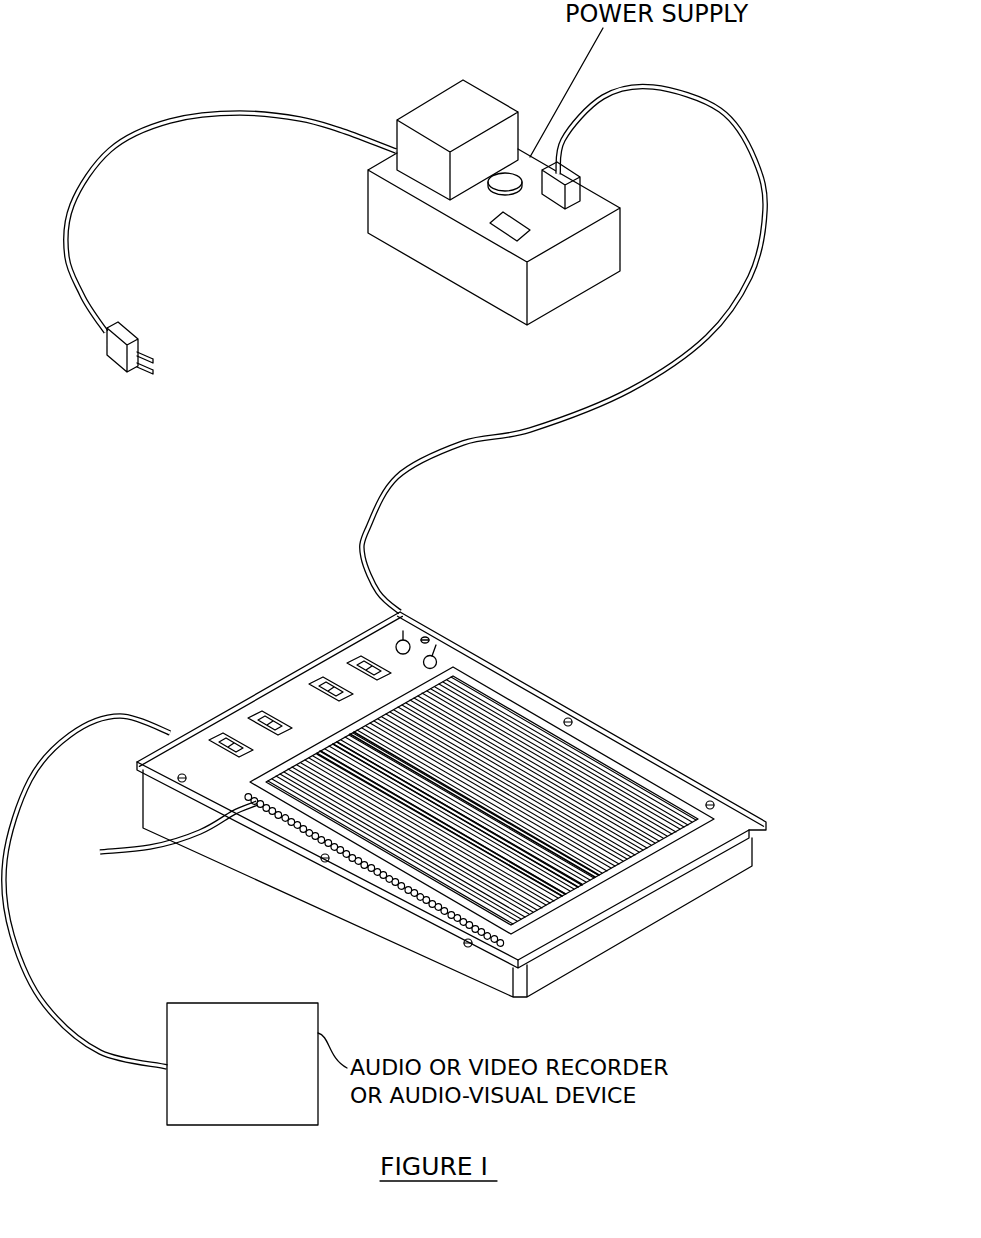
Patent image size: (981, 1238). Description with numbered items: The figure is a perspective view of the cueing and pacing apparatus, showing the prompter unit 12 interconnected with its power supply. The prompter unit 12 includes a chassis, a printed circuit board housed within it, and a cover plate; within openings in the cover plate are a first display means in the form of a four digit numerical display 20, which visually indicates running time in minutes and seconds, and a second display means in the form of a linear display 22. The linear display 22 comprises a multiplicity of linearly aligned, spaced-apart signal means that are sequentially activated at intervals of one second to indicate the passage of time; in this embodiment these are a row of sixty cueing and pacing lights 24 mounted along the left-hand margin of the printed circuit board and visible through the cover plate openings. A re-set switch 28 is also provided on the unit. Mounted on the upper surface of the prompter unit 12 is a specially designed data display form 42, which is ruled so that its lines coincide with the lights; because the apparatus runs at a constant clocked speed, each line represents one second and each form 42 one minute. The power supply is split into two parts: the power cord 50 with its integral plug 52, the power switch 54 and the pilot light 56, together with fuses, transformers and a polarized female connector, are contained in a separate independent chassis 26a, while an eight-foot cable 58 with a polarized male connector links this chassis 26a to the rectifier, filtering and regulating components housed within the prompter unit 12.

The prompter unit 12 is at (437, 628).
The four digit numerical display 20 is at (358, 657).
The linear display 22 is at (360, 865).
The cueing and pacing lights 24 is at (161, 834).
The independent chassis 26a is at (503, 313).
The re-set switch 28 is at (440, 657).
The data display form 42 is at (550, 717).
The power cord 50 is at (93, 194).
The plug 52 is at (130, 332).
The power switch 54 is at (507, 225).
The pilot light 56 is at (487, 188).
The cable 58 is at (708, 340).